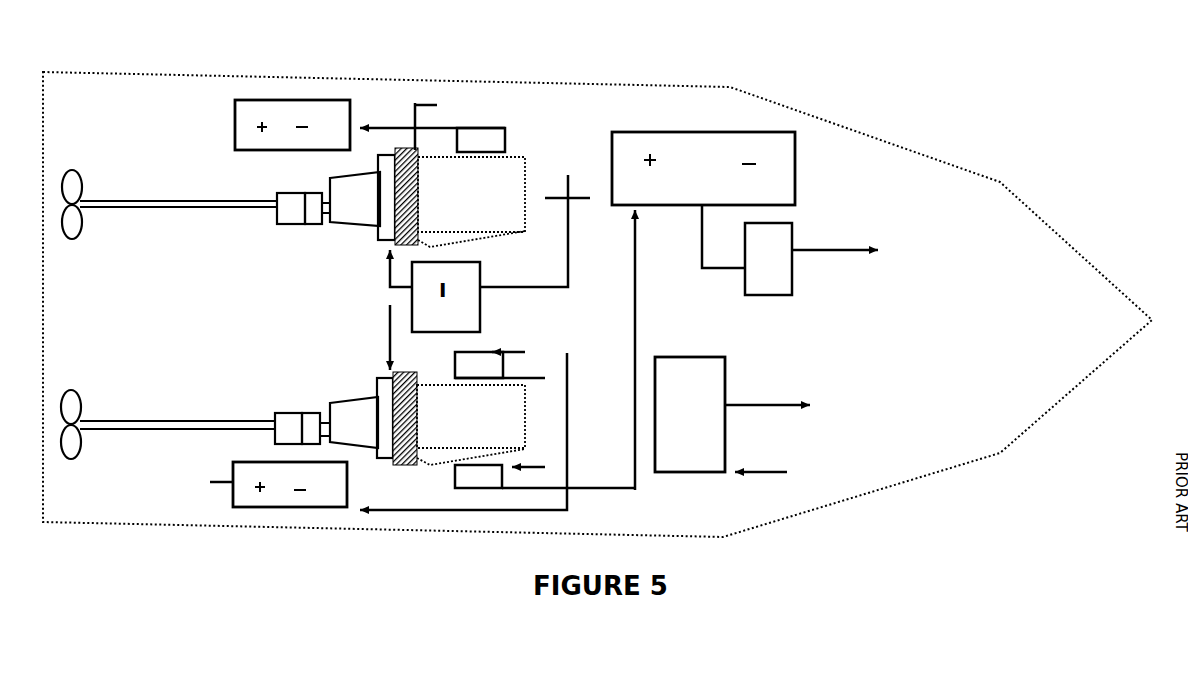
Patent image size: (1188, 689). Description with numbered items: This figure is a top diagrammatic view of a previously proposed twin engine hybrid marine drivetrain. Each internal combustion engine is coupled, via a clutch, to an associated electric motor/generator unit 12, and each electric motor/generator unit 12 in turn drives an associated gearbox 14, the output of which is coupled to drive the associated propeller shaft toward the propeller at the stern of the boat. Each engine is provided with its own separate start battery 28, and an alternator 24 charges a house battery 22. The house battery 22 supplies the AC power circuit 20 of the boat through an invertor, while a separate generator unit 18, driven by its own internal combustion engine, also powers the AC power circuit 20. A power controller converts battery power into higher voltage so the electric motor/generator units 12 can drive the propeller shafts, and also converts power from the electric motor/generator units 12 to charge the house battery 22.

The electric motor/generator unit 12 is at (368, 226).
The gearbox 14 is at (235, 122).
The generator unit 18 is at (772, 467).
The AC power circuit 20 is at (750, 403).
The house battery 22 is at (700, 148).
The alternator 24 is at (507, 127).
The start battery 28 is at (290, 110).